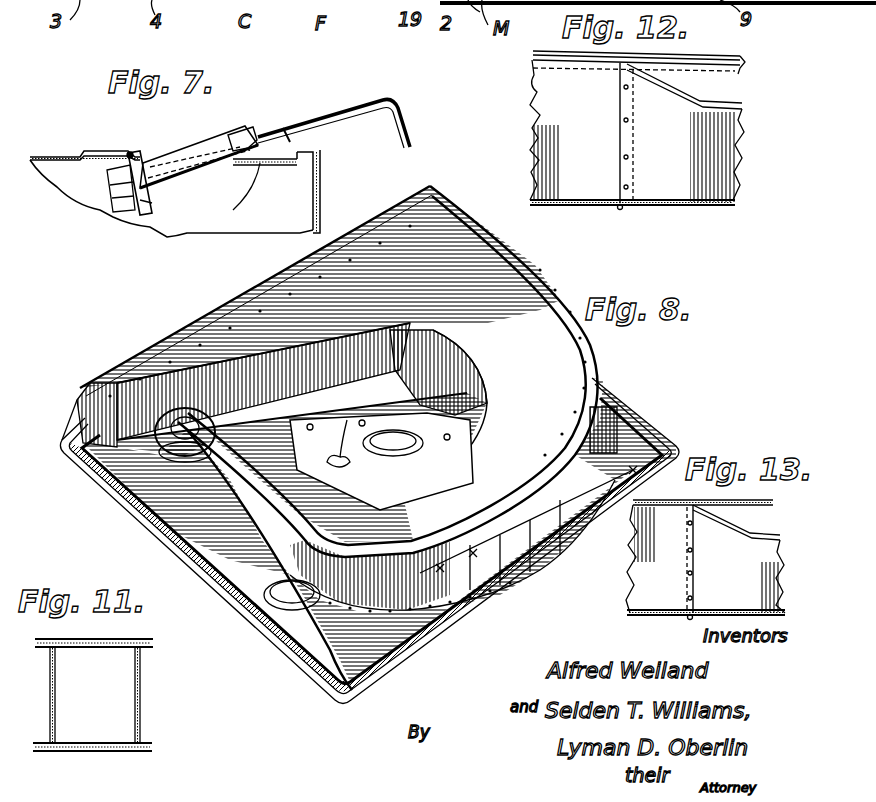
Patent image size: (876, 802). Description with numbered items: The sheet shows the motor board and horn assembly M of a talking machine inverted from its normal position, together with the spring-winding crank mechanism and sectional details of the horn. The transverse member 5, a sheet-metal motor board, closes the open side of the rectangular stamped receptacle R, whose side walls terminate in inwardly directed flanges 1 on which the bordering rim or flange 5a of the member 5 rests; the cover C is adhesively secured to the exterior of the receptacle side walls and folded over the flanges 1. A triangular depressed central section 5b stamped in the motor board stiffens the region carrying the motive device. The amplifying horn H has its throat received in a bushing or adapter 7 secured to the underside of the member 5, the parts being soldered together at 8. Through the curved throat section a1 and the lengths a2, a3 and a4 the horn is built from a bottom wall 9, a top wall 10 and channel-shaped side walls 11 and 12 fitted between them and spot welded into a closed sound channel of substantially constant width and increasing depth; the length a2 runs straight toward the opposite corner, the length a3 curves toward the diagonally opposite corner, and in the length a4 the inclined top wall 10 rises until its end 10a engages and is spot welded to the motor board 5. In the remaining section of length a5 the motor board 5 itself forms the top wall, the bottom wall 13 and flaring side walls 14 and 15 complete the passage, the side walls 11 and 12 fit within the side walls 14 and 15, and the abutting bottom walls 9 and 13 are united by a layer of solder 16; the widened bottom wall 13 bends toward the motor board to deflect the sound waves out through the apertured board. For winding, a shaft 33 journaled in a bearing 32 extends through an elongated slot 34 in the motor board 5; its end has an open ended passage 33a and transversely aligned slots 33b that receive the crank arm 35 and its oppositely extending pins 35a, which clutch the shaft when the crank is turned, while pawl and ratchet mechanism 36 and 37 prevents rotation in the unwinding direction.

In FIG. 7, the inwardly directed flanges 1 is at (320, 167).
In FIG. 7, the transverse member 5 is at (60, 158).
In FIG. 12, the transverse member 5 is at (742, 74).
In FIG. 8, the transverse member 5 is at (637, 430).
In FIG. 13, the transverse member 5 is at (770, 502).
In FIG. 7, the rim or flange 5a is at (317, 145).
In FIG. 12, the rim or flange 5a is at (703, 53).
In FIG. 8, the rim or flange 5a is at (110, 503).
In FIG. 8, the depressed central section 5b is at (453, 410).
In FIG. 8, the bushing or adapter 7 is at (157, 490).
In FIG. 8, the soldered union 8 is at (117, 507).
In FIG. 12, the bottom wall 9 is at (683, 207).
In FIG. 8, the bottom wall 9 is at (240, 567).
In FIG. 11, the bottom wall 9 is at (80, 751).
In FIG. 13, the bottom wall 9 is at (706, 601).
In FIG. 12, the top wall 10 is at (735, 100).
In FIG. 8, the top wall 10 is at (263, 550).
In FIG. 11, the top wall 10 is at (100, 640).
In FIG. 13, the top wall 10 is at (736, 535).
In FIG. 12, the end of top wall 10a is at (623, 70).
In FIG. 13, the end of top wall 10a is at (687, 507).
In FIG. 12, the side wall 11 is at (720, 173).
In FIG. 8, the side wall 11 is at (413, 483).
In FIG. 11, the side wall 11 is at (50, 690).
In FIG. 11, the side wall 12 is at (141, 697).
In FIG. 13, the side wall 12 is at (773, 553).
In FIG. 12, the bottom wall 13 is at (553, 205).
In FIG. 8, the bottom wall 13 is at (590, 343).
In FIG. 12, the side wall 14 is at (543, 150).
In FIG. 8, the side wall 14 is at (540, 520).
In FIG. 8, the side wall 15 is at (427, 353).
In FIG. 13, the side wall 15 is at (640, 580).
In FIG. 12, the layer of solder 16 is at (622, 209).
In FIG. 8, the layer of solder 16 is at (480, 523).
In FIG. 13, the layer of solder 16 is at (687, 618).
In FIG. 7, the bearing 32 is at (127, 182).
In FIG. 7, the shaft 33 is at (177, 177).
In FIG. 7, the open ended passage 33a is at (234, 135).
In FIG. 7, the transversely aligned slots 33b is at (243, 197).
In FIG. 7, the elongated slot 34 is at (233, 167).
In FIG. 8, the elongated slot 34 is at (183, 523).
In FIG. 7, the crank arm 35 is at (337, 117).
In FIG. 7, the pins 35a is at (283, 130).
In FIG. 7, the pawl and ratchet mechanism 36 is at (147, 207).
In FIG. 7, the pawl and ratchet mechanism 37 is at (125, 160).
In FIG. 7, the cover C is at (322, 200).
In FIG. 7, the receptacle R is at (312, 213).
In FIG. 12, the amplifying horn H is at (717, 140).
In FIG. 8, the amplifying horn H is at (533, 277).
In FIG. 11, the amplifying horn H is at (137, 758).
In FIG. 13, the amplifying horn H is at (747, 533).
In FIG. 8, the assembly M is at (303, 680).
In FIG. 8, the curved throat section a1 is at (80, 435).
In FIG. 8, the horn length a2 is at (300, 560).
In FIG. 8, the horn length a3 is at (508, 531).
In FIG. 8, the horn length a4 is at (461, 577).
In FIG. 8, the horn length a5 is at (513, 463).